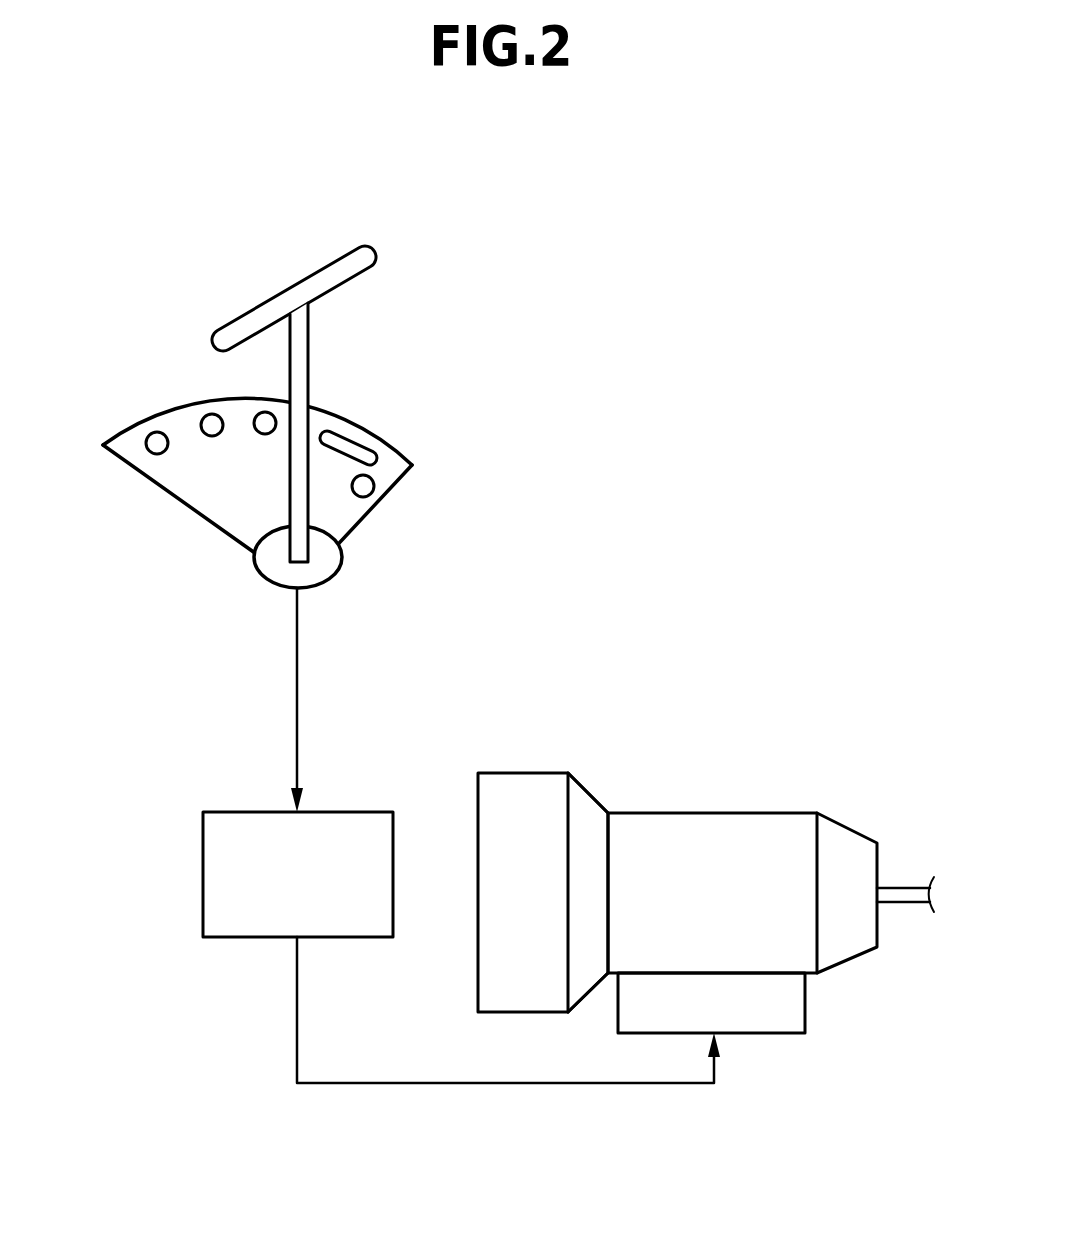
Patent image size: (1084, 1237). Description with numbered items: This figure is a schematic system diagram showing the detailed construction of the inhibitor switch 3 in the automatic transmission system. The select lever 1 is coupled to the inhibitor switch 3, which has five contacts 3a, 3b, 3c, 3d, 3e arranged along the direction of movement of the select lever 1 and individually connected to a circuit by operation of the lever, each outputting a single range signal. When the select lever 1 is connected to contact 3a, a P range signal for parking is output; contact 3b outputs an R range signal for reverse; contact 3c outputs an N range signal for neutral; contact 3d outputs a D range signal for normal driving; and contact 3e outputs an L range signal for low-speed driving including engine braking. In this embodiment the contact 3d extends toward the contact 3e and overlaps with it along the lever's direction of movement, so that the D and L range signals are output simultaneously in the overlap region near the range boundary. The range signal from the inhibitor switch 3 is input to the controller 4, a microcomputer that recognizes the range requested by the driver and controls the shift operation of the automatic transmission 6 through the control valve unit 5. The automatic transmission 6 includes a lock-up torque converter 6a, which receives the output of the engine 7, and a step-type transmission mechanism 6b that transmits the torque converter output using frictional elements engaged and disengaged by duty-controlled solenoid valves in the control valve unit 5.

The select lever 1 is at (278, 305).
The inhibitor switch 3 is at (446, 470).
The contact 3a is at (150, 447).
The contact 3b is at (202, 437).
The contact 3c is at (257, 433).
The contact 3d is at (337, 455).
The contact 3e is at (371, 494).
The controller 4 is at (350, 812).
The control valve unit 5 is at (758, 1015).
The automatic transmission 6 is at (751, 830).
The lock-up torque converter 6a is at (587, 808).
The transmission mechanism 6b is at (635, 700).
The engine 7 is at (525, 795).